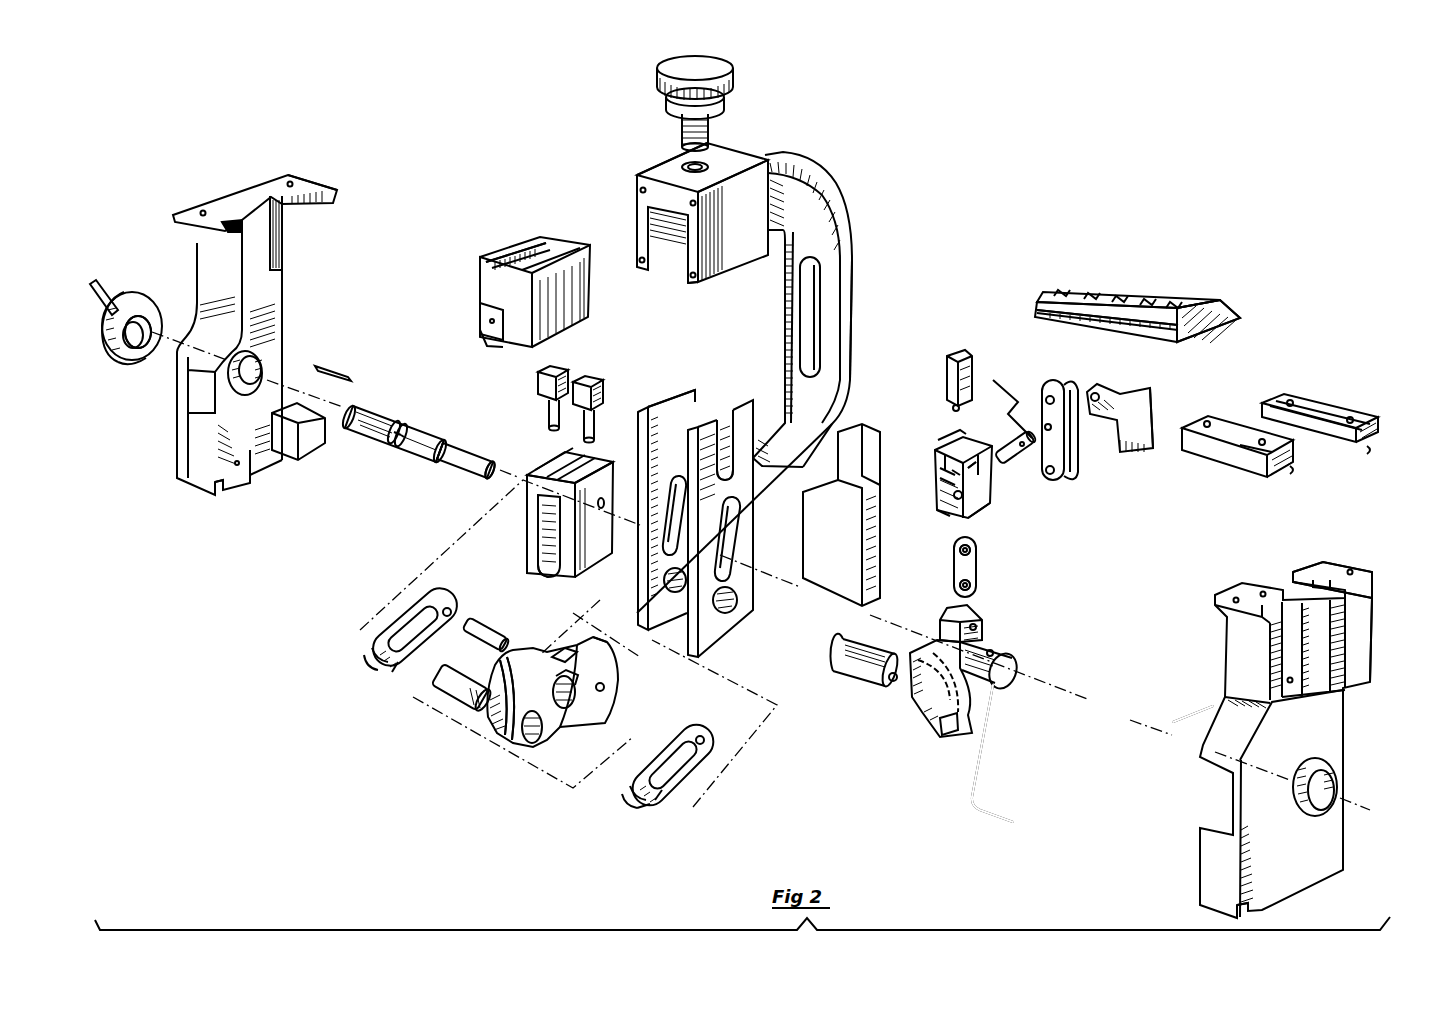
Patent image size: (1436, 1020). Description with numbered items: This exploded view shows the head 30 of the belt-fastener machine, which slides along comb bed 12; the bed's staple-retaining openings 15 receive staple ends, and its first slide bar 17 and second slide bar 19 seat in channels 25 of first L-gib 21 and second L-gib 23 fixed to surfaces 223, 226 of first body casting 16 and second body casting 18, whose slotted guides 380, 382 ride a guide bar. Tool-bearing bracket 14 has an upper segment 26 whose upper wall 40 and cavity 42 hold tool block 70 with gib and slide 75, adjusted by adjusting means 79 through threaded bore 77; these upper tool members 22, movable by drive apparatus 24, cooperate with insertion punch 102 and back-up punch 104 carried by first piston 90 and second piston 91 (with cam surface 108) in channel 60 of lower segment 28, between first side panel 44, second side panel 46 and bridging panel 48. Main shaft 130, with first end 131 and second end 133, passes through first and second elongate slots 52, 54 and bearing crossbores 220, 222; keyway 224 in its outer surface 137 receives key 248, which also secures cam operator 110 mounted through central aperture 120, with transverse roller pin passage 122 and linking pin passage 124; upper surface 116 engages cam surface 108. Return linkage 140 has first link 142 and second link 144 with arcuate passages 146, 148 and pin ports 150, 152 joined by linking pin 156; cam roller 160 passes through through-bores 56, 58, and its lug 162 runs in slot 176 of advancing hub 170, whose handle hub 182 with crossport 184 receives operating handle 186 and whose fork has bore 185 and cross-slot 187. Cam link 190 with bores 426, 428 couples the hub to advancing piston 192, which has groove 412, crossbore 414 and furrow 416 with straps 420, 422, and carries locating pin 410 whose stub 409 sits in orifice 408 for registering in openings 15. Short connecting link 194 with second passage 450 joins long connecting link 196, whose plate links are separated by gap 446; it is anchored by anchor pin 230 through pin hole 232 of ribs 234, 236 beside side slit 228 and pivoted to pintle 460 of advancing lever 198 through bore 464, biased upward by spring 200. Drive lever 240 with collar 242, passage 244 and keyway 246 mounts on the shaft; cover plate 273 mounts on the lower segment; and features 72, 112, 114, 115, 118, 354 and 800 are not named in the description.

The comb bed assembly 12 is at (1222, 300).
The tool-bearing bracket 14 is at (853, 204).
The staple-retaining openings 15 is at (1060, 292).
The first body casting 16 is at (172, 440).
The first slide bar 17 is at (1036, 313).
The second body casting 18 is at (1357, 852).
The second slide bar 19 is at (1242, 319).
The first L-gib 21 is at (1234, 452).
The tool members 22 is at (523, 413).
The second L-gib 23 is at (1330, 410).
The drive apparatus 24 is at (350, 654).
The channel 25 is at (1292, 462).
The upper segment 26 is at (626, 202).
The lower segment 28 is at (756, 592).
The head 30 is at (852, 292).
The upper wall 40 is at (655, 172).
The cavity 42 is at (672, 270).
The first side panel 44 is at (640, 422).
The second side panel 46 is at (702, 648).
The bridging panel 48 is at (723, 412).
The first elongate slot 52 is at (674, 478).
The second elongate slot 54 is at (736, 508).
The through-bore 56 is at (664, 588).
The through-bore 58 is at (735, 612).
The channel 60 is at (656, 410).
The tool block 70 is at (469, 287).
The tab 72 is at (470, 316).
The gib and slide 75 is at (525, 242).
The threaded bore 77 is at (688, 158).
The adjusting means 79 is at (722, 134).
The first piston 90 is at (520, 546).
The second piston 91 is at (568, 560).
The insertion punch 102 is at (548, 369).
The back-up punch 104 is at (598, 383).
The cam surface 108 is at (583, 548).
The cam operator 110 is at (489, 733).
The pin 112 is at (445, 702).
The curved surface 114 is at (500, 660).
The surface 115 is at (535, 676).
The upper surface 116 is at (556, 652).
The block end 118 is at (619, 668).
The central aperture 120 is at (570, 706).
The roller pin passage 122 is at (538, 737).
The linking pin passage 124 is at (603, 691).
The main shaft 130 is at (404, 460).
The first end 131 is at (354, 428).
The second end 133 is at (484, 476).
The outer surface 137 is at (380, 441).
The return linkage 140 is at (632, 813).
The first link 142 is at (372, 670).
The second link 144 is at (628, 793).
The arcuate passage 146 is at (394, 674).
The arcuate passage 148 is at (660, 802).
The pin port 150 is at (451, 606).
The pin port 152 is at (705, 737).
The linking pin 156 is at (483, 625).
The cam roller 160 is at (838, 667).
The protruding lug 162 is at (889, 681).
The advancing hub 170 is at (910, 707).
The slot 176 is at (944, 726).
The handle hub 182 is at (1016, 662).
The handle hub crossport 184 is at (995, 652).
The connecting-link bore 185 is at (983, 625).
The operating handle 186 is at (985, 762).
The cross-slot 187 is at (945, 622).
The cam link 190 is at (980, 567).
The advancing piston 192 is at (998, 506).
The short connecting link 194 is at (1004, 433).
The long connecting link 196 is at (1080, 452).
The advancing lever 198 is at (1162, 436).
The biasing spring 200 is at (996, 380).
The bearing crossbore 220 is at (228, 374).
The bearing crossbore 222 is at (1315, 812).
The first body casting surface 223 is at (318, 188).
The keyway 224 is at (386, 412).
The second body casting surface 226 is at (1340, 562).
The side slit 228 is at (1356, 616).
The anchor pin 230 is at (1192, 708).
The pin hole 232 is at (1290, 685).
The rib 234 is at (1330, 695).
The rib 236 is at (1355, 690).
The drive lever 240 is at (103, 282).
The mounting collar 242 is at (140, 295).
The passage 244 is at (146, 355).
The keyway 246 is at (142, 312).
The key 248 is at (336, 372).
The cover plate 273 is at (882, 570).
The peg 354 is at (603, 498).
The slotted guide 380 is at (236, 490).
The slotted guide 382 is at (1262, 908).
The orifice 408 is at (946, 434).
The locating pin stub 409 is at (950, 407).
The locating pin 410 is at (973, 370).
The open groove 412 is at (955, 506).
The crossbore 414 is at (978, 506).
The furrow 416 is at (938, 470).
The first strap 420 is at (944, 480).
The second strap 422 is at (988, 478).
The first bore 426 is at (972, 550).
The second bore 428 is at (972, 586).
The gap 446 is at (1066, 478).
The second passage 450 is at (1020, 456).
The pintle 460 is at (1140, 392).
The bore 464 is at (1098, 391).
The ledge 800 is at (938, 446).